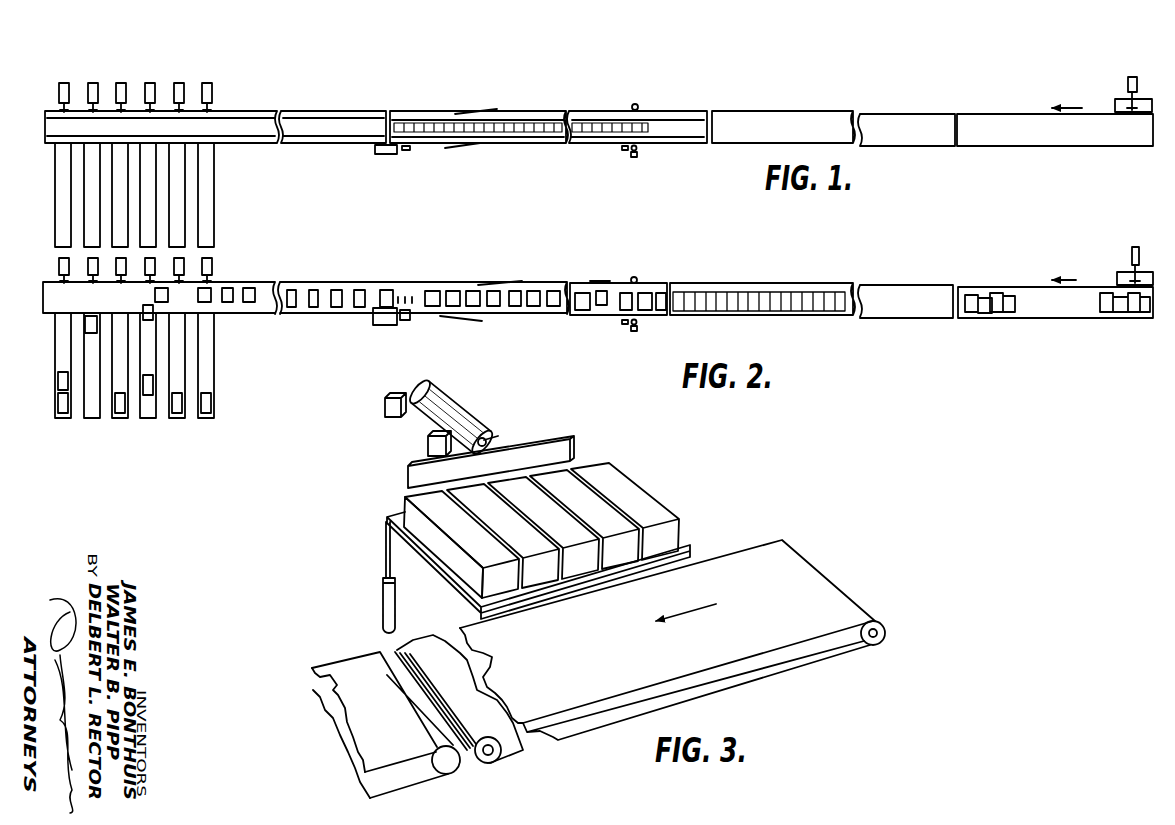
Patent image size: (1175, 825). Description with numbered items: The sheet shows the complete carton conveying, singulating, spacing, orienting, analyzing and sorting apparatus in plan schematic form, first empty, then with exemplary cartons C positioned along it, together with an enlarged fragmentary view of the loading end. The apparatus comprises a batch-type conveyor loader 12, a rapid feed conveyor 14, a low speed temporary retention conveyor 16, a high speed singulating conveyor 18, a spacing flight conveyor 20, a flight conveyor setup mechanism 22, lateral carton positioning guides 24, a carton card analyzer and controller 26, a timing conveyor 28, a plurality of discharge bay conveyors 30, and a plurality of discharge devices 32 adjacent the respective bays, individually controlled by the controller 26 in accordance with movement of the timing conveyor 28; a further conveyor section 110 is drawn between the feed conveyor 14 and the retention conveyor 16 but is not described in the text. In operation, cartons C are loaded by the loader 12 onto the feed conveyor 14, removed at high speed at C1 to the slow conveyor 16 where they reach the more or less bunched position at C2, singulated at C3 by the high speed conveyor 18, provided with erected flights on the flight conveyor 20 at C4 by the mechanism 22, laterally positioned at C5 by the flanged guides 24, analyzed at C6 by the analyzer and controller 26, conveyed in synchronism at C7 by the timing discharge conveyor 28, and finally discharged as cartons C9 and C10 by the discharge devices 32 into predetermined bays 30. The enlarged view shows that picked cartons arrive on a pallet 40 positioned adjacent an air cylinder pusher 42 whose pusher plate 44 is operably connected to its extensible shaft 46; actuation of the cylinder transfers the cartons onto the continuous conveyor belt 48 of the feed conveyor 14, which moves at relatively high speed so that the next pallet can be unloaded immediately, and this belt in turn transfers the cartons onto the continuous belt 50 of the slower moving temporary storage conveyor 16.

In FIG. 1, the batch-type conveyor loader 12 is at (1134, 76).
In FIG. 2, the batch-type conveyor loader 12 is at (1136, 246).
In FIG. 1, the rapid feed conveyor 14 is at (1024, 106).
In FIG. 2, the rapid feed conveyor 14 is at (1085, 278).
In FIG. 3, the rapid feed conveyor 14 is at (812, 552).
In FIG. 1, the conveyor section 110 is at (928, 107).
In FIG. 1, the low speed temporary retention conveyor 16 is at (806, 115).
In FIG. 2, the low speed temporary retention conveyor 16 is at (824, 281).
In FIG. 3, the low speed temporary retention conveyor 16 is at (336, 665).
In FIG. 1, the high speed singulating conveyor 18 is at (684, 118).
In FIG. 2, the high speed singulating conveyor 18 is at (650, 283).
In FIG. 1, the spacing flight conveyor 20 is at (593, 126).
In FIG. 2, the spacing flight conveyor 20 is at (558, 280).
In FIG. 1, the flight conveyor setup mechanism 22 is at (648, 155).
In FIG. 2, the flight conveyor setup mechanism 22 is at (650, 323).
In FIG. 1, the lateral carton positioning guides 24 is at (480, 112).
In FIG. 2, the lateral carton positioning guides 24 is at (546, 283).
In FIG. 1, the carton card analyzer and controller 26 is at (377, 156).
In FIG. 2, the carton card analyzer and controller 26 is at (372, 319).
In FIG. 1, the timing conveyor 28 is at (333, 118).
In FIG. 2, the timing conveyor 28 is at (371, 283).
In FIG. 1, the discharge bay conveyors 30 is at (215, 210).
In FIG. 2, the discharge bay conveyors 30 is at (215, 380).
In FIG. 1, the discharge devices 32 is at (212, 99).
In FIG. 2, the discharge devices 32 is at (212, 270).
In FIG. 3, the pallet 40 is at (395, 512).
In FIG. 3, the air cylinder pusher 42 is at (450, 410).
In FIG. 3, the pusher plate 44 is at (576, 450).
In FIG. 3, the extensible shaft 46 is at (497, 442).
In FIG. 3, the continuous conveyor belt 48 is at (712, 567).
In FIG. 3, the continuous belt 50 is at (322, 665).
In FIG. 2, the cartons C is at (1130, 312).
In FIG. 3, the cartons C is at (624, 490).
In FIG. 2, the cartons at high speed removal position C1 is at (995, 312).
In FIG. 2, the cartons at bunched position C2 is at (793, 306).
In FIG. 2, the cartons at singulating position C3 is at (661, 299).
In FIG. 2, the cartons at flight erection position C4 is at (581, 310).
In FIG. 2, the cartons at lateral positioning position C5 is at (473, 297).
In FIG. 2, the cartons at analyzing position C6 is at (388, 297).
In FIG. 2, the cartons at synchronized conveying position C7 is at (291, 292).
In FIG. 2, the discharged carton C9 is at (155, 315).
In FIG. 2, the discharged carton C10 is at (85, 324).